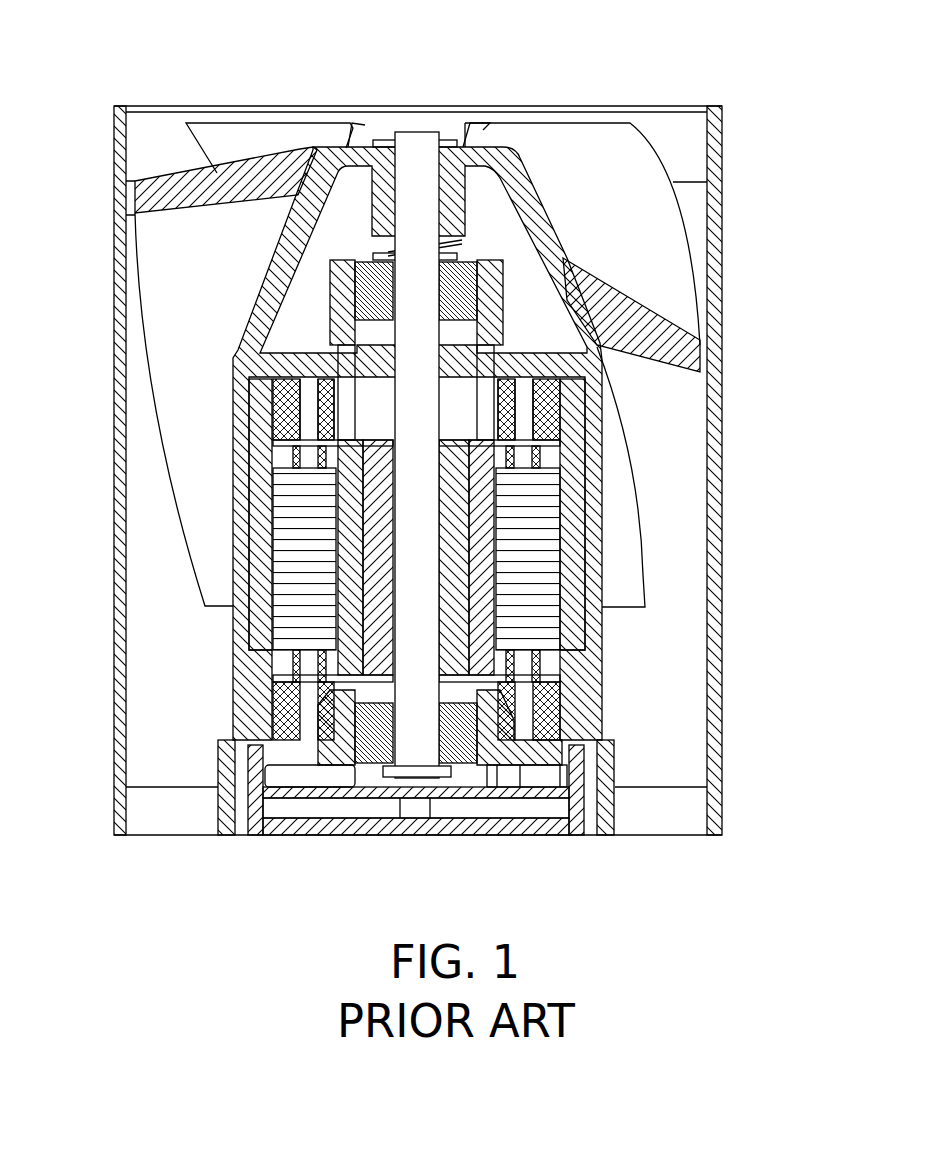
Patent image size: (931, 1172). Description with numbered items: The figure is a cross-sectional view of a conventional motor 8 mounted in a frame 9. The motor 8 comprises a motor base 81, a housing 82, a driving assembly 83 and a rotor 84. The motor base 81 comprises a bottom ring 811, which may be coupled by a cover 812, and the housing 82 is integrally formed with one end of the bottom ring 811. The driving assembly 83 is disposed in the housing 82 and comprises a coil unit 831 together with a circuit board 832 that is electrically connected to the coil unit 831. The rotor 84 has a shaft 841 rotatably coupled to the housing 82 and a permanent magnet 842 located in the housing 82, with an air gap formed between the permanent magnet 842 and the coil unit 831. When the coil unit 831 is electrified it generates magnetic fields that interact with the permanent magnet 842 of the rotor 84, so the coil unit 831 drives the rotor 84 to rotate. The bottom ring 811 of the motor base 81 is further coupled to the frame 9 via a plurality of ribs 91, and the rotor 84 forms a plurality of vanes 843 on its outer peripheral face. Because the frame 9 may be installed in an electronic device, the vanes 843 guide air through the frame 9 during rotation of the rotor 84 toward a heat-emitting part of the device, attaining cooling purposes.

The motor 8 is at (668, 528).
The frame 9 is at (712, 368).
The ribs 91 is at (690, 802).
The motor base 81 is at (459, 829).
The bottom ring 811 is at (615, 800).
The cover 812 is at (362, 832).
The housing 82 is at (578, 552).
The driving assembly 83 is at (444, 523).
The coil unit 831 is at (538, 625).
The circuit board 832 is at (540, 768).
The rotor 84 is at (413, 371).
The shaft 841 is at (405, 400).
The permanent magnet 842 is at (350, 550).
The vanes 843 is at (260, 135).